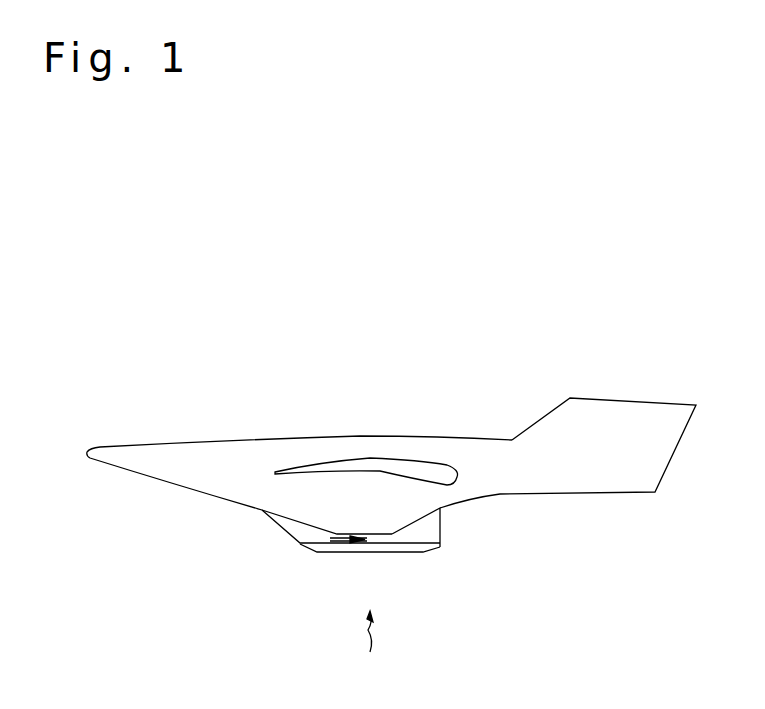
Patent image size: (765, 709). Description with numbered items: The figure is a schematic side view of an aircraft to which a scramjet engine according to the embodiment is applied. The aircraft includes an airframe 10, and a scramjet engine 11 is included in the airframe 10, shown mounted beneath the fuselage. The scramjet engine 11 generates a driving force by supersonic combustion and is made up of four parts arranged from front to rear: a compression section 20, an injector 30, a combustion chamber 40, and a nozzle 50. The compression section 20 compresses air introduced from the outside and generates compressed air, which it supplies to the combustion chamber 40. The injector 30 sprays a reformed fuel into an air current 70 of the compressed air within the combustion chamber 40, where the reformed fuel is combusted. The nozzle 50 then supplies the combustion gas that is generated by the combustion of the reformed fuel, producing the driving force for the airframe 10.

The airframe 10 is at (360, 440).
The scramjet engine 11 is at (373, 643).
The compression section 20 is at (320, 552).
The injector 30 is at (358, 552).
The combustion chamber 40 is at (377, 552).
The nozzle 50 is at (408, 550).
The air current 70 is at (350, 536).